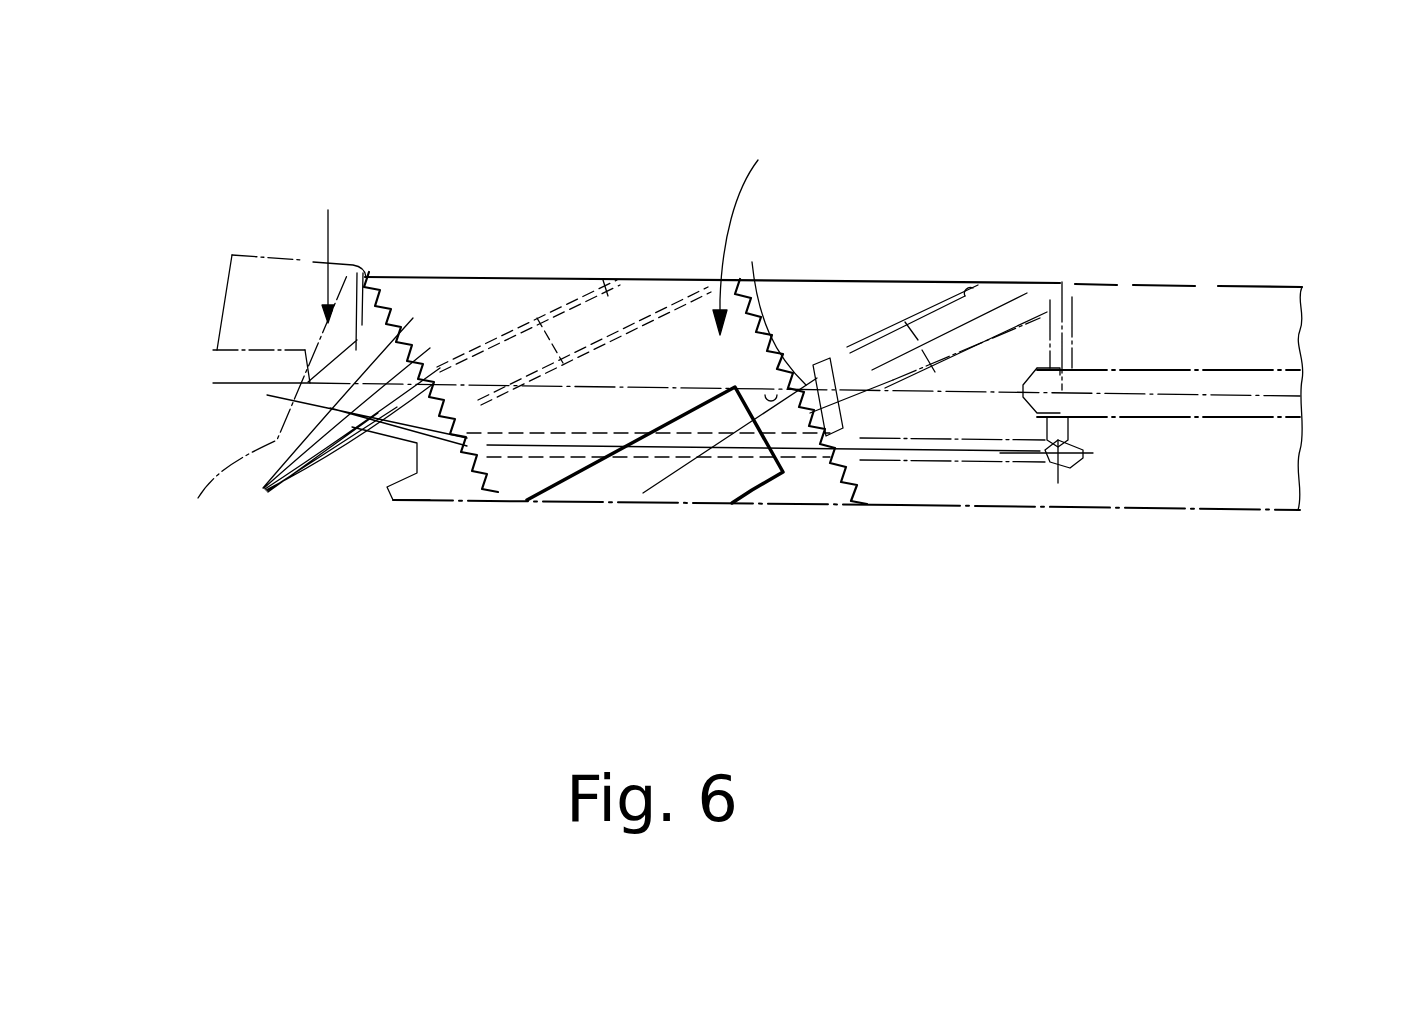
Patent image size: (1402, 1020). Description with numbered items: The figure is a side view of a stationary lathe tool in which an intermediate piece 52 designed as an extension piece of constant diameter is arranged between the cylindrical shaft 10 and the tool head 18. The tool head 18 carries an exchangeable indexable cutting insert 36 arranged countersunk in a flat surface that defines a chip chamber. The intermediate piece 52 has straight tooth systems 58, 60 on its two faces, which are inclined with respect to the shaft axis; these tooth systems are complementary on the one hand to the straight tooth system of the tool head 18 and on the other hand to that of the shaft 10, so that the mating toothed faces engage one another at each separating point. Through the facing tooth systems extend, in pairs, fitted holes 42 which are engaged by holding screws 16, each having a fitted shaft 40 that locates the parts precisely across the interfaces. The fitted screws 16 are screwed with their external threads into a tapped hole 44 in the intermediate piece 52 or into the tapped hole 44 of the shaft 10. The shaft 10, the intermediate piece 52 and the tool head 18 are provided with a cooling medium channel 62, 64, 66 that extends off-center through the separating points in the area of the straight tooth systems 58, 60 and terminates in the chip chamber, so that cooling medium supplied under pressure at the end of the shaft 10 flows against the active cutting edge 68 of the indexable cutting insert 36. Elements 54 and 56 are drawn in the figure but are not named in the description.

The cylindrical shaft 10 is at (1160, 327).
The fitted screw 16 is at (387, 457).
The tool head 18 is at (330, 212).
The indexable cutting insert 36 is at (237, 358).
The fitted shaft 40 is at (448, 440).
The fitted hole 42 is at (440, 365).
The tapped hole 44 is at (603, 280).
The intermediate piece 52 is at (664, 303).
The threaded nut 54 is at (362, 270).
The threaded nut 56 is at (780, 348).
The straight tooth system 58 is at (335, 421).
The straight tooth system 60 is at (832, 368).
The cooling medium channel 62 is at (1237, 383).
The cooling medium channel 64 is at (375, 462).
The cooling medium channel 66 is at (677, 447).
The active cutting edge 68 is at (315, 405).